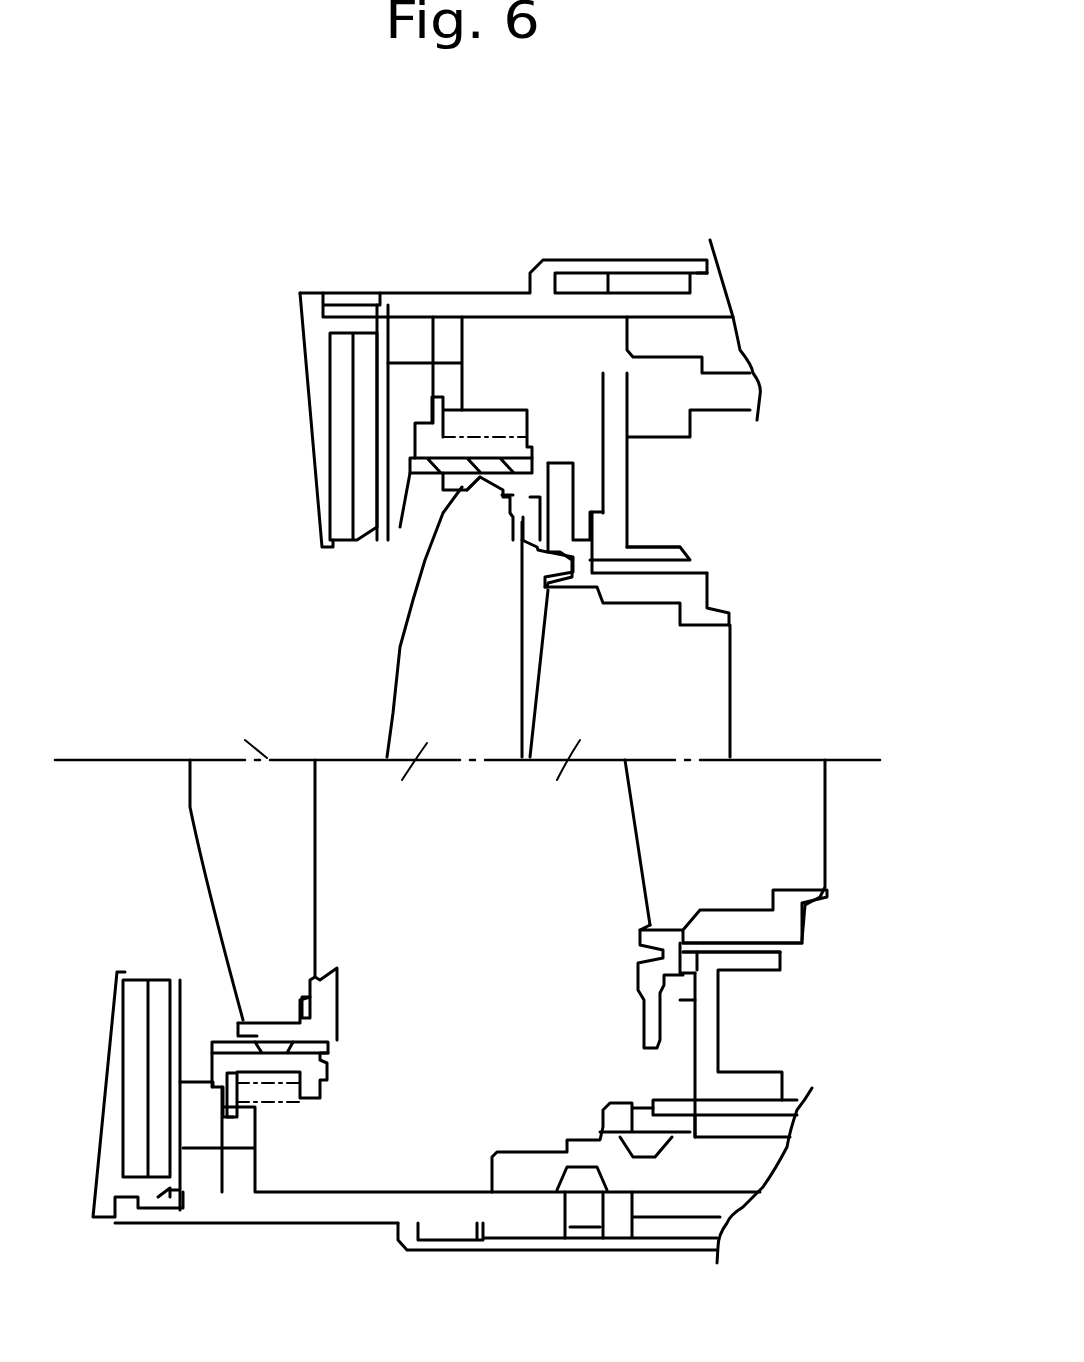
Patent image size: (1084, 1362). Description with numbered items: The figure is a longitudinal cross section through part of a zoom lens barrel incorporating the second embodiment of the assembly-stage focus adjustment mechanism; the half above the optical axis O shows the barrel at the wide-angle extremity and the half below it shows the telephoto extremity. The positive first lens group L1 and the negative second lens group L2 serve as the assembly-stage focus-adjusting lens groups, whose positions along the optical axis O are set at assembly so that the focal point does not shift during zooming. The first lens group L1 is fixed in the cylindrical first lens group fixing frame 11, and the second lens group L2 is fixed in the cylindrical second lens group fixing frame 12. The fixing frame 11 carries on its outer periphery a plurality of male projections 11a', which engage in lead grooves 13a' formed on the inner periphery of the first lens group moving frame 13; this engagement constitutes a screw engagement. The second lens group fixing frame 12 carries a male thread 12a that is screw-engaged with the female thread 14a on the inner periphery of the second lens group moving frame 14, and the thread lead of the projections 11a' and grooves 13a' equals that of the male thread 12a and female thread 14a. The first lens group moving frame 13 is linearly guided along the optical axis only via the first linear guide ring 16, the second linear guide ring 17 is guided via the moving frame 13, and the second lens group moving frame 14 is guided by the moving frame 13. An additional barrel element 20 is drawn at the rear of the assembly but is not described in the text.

The first lens group fixing frame 11 is at (462, 487).
The male projections 11a' is at (373, 817).
The first lens group moving frame 13 is at (482, 447).
The lead grooves 13a' is at (256, 756).
The second lens group fixing frame 12 is at (695, 597).
The male thread 12a is at (687, 560).
The second lens group moving frame 14 is at (663, 420).
The female thread 14a is at (703, 749).
The first linear guide ring 16 is at (628, 268).
The second linear guide ring 17 is at (507, 307).
The rear frame 20 is at (697, 330).
The first lens group L1 is at (307, 810).
The second lens group L2 is at (640, 803).
The optical axis O is at (267, 758).